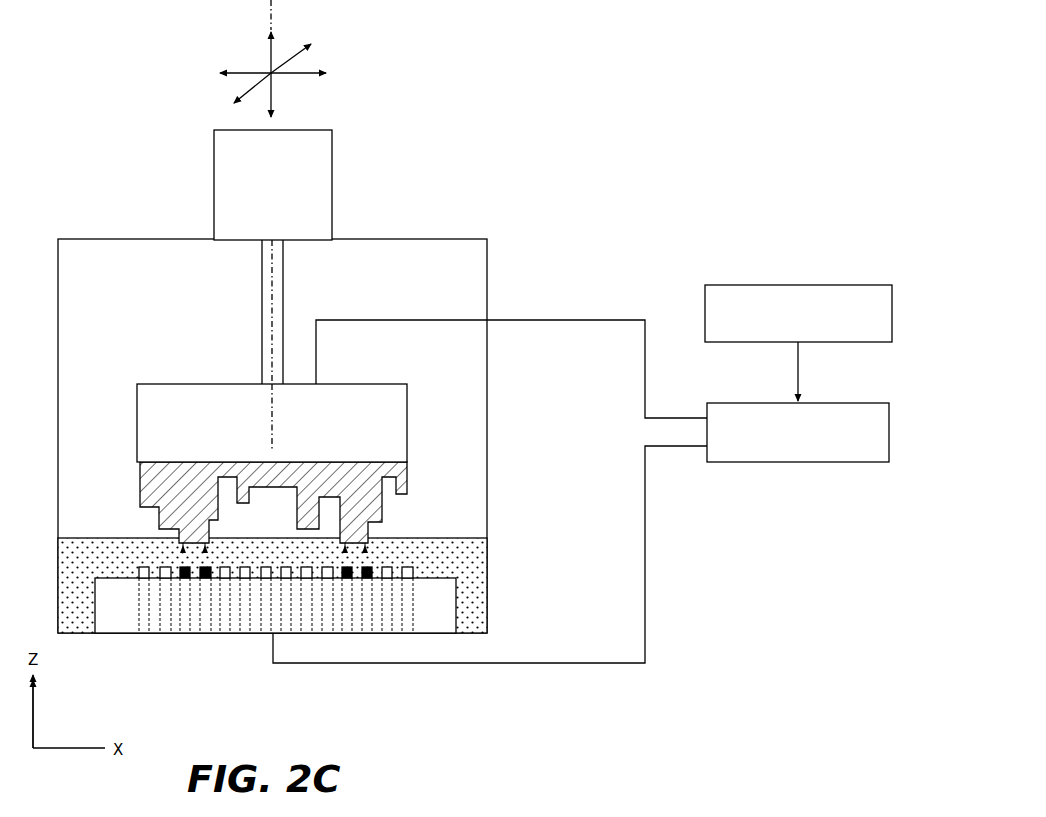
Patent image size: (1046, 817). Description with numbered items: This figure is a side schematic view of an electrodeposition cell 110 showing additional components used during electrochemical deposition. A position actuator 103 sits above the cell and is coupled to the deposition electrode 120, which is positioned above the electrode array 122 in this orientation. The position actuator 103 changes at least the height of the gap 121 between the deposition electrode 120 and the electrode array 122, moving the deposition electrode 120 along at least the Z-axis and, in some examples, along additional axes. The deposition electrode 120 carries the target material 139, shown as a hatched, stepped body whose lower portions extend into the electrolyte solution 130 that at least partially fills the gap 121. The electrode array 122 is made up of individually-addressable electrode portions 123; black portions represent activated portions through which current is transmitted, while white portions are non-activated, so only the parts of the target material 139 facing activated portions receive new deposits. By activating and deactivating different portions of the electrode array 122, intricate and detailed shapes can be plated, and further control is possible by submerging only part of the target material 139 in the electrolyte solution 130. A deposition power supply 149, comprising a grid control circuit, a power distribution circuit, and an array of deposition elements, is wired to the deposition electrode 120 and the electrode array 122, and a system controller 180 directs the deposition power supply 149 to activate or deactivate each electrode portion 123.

The position actuator 103 is at (273, 289).
The electrodeposition cell 110 is at (465, 196).
The deposition electrode 120 is at (392, 443).
The gap 121 is at (166, 542).
The electrode array 122 is at (440, 587).
The individually-addressable electrode portion 123 is at (403, 566).
The electrolyte solution 130 is at (465, 577).
The target material 139 is at (392, 505).
The deposition power supply 149 is at (798, 432).
The system controller 180 is at (798, 343).